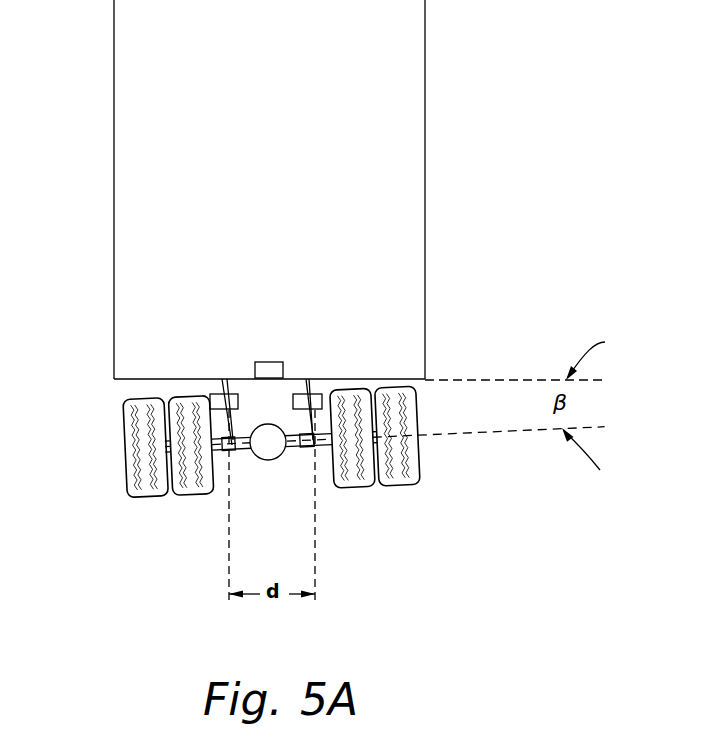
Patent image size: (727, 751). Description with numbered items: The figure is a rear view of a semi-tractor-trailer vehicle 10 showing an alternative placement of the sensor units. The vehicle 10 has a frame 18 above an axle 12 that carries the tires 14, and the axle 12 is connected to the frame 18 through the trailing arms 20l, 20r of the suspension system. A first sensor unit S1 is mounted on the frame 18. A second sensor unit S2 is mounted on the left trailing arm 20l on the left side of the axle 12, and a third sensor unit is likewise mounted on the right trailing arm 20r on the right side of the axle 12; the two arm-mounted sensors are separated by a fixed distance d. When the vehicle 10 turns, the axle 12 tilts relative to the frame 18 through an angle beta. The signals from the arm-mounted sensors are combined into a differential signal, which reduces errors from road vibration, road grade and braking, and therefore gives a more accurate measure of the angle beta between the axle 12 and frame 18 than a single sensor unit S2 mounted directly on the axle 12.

The vehicle 10 is at (460, 200).
The frame 18 is at (137, 378).
The left trailing arm 20l is at (234, 378).
The right trailing arm 20r is at (306, 378).
The first sensor unit S1 is at (270, 362).
The second sensor unit S2 is at (382, 342).
The tires 14 is at (193, 496).
The axle 12 is at (286, 458).